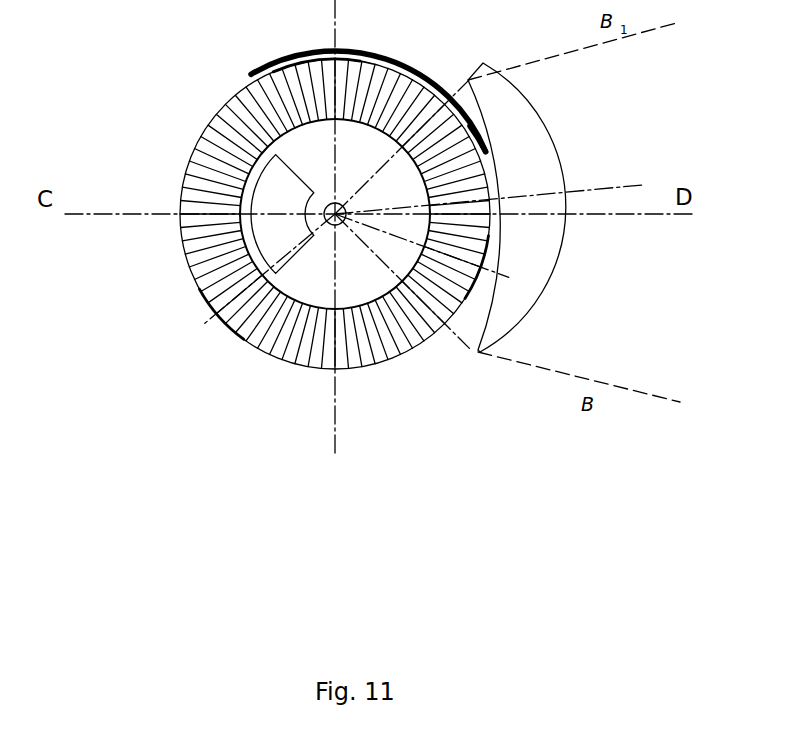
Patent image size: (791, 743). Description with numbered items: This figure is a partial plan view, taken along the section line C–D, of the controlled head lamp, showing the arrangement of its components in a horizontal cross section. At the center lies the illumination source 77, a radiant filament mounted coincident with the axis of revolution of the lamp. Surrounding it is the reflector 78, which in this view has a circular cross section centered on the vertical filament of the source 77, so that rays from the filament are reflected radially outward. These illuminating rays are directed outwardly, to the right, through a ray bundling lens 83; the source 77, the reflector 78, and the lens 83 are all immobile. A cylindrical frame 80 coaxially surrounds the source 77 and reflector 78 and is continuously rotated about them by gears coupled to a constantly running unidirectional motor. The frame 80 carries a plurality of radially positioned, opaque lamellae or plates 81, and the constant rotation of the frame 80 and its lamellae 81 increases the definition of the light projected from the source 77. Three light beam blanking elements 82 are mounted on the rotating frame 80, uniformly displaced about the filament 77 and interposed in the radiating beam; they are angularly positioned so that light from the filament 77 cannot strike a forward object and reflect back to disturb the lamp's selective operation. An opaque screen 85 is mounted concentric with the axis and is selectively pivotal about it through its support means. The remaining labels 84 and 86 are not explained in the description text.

The illumination source 77 is at (346, 210).
The reflector 78 is at (286, 168).
The cylindrical frame 80 is at (415, 350).
The lamellae 81 is at (425, 172).
The light beam blanking elements 82 is at (318, 58).
The ray bundling lens 83 is at (537, 147).
The inclined axis line 84 is at (613, 185).
The opaque screen 85 is at (380, 46).
The shroud end 86 is at (488, 152).